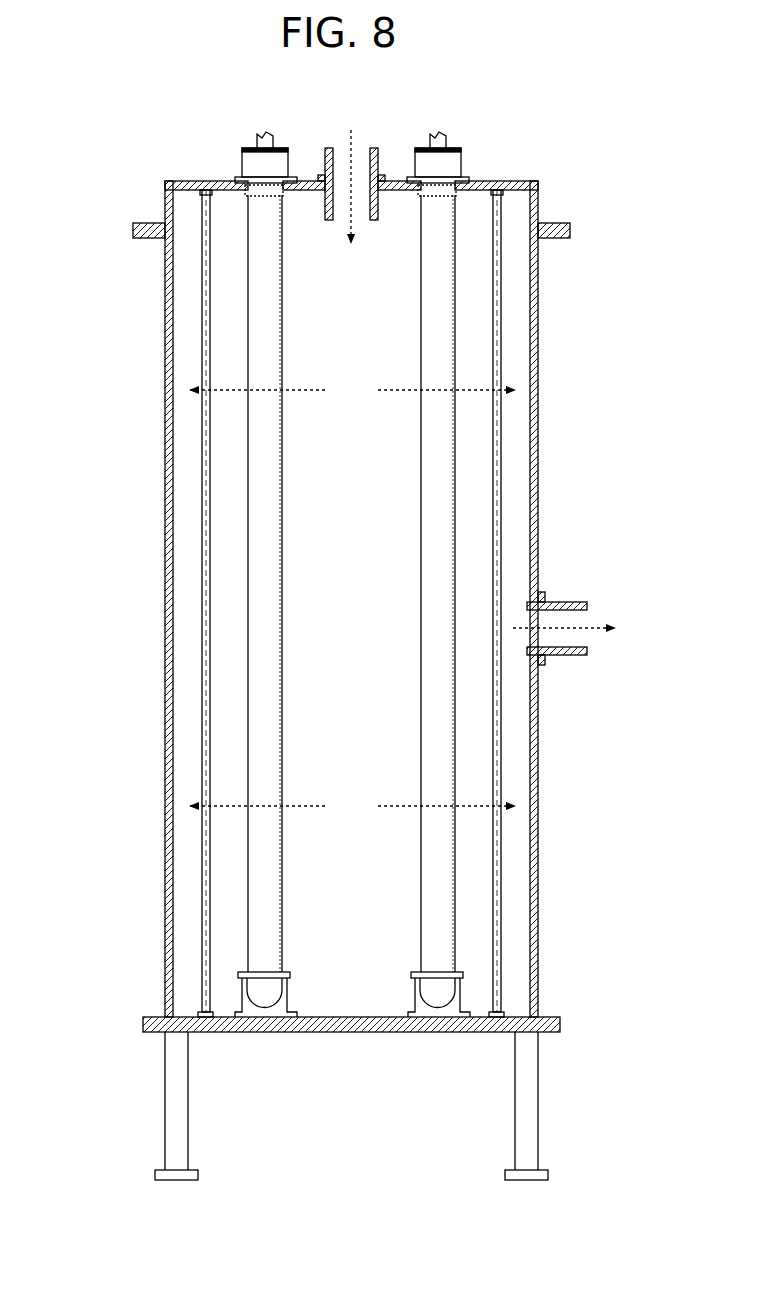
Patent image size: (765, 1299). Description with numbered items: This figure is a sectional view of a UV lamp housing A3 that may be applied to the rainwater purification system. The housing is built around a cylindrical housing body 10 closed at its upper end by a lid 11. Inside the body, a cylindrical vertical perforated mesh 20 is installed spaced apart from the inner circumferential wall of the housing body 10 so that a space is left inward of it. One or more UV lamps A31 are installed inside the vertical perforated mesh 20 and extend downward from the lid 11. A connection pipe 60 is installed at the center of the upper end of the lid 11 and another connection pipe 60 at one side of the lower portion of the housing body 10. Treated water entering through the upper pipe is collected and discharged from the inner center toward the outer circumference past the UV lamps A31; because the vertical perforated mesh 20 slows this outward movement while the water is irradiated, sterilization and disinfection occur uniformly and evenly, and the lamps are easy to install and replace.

The UV lamp housing A3 is at (142, 168).
The housing body 10 is at (540, 270).
The lid 11 is at (523, 181).
The vertical perforated mesh 20 is at (205, 442).
The UV lamp A31 is at (260, 502).
The connection pipe 60 is at (380, 160).